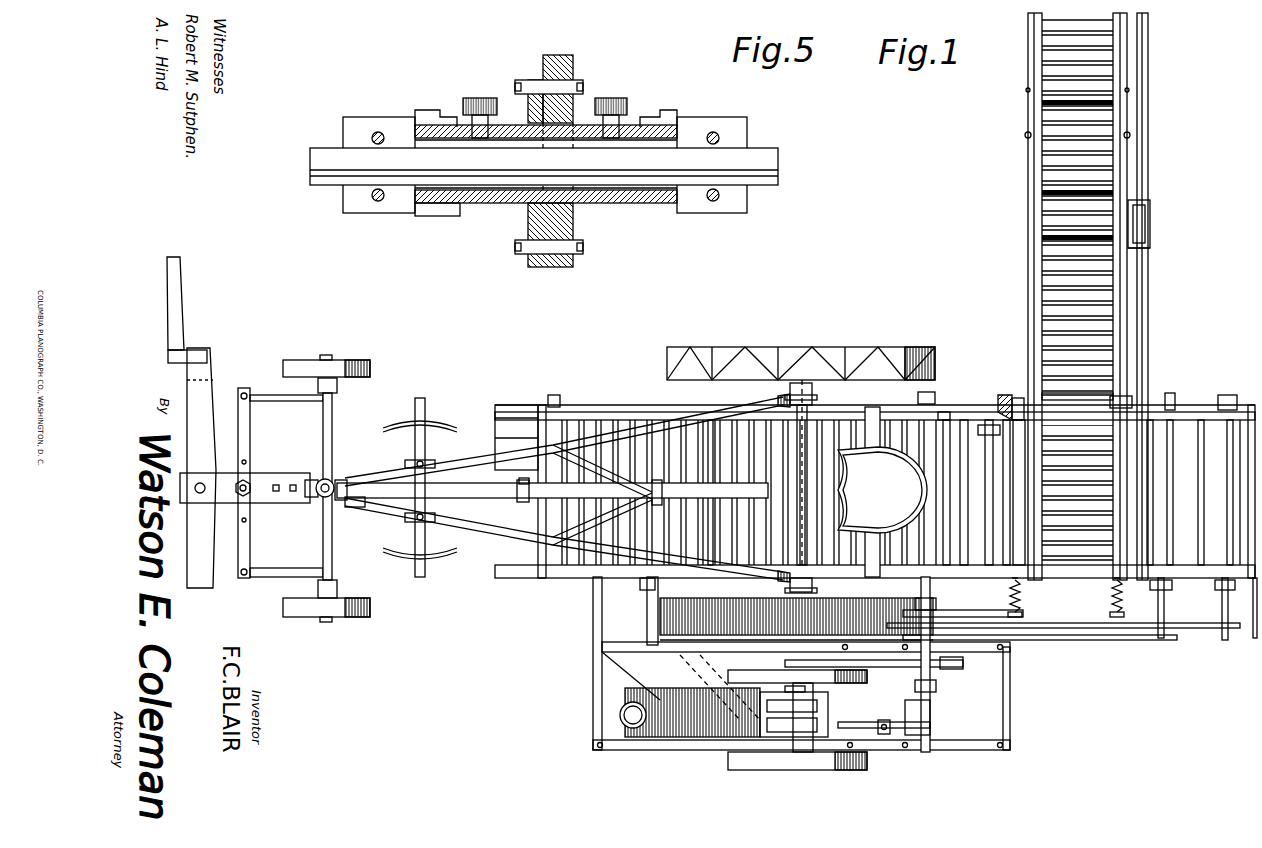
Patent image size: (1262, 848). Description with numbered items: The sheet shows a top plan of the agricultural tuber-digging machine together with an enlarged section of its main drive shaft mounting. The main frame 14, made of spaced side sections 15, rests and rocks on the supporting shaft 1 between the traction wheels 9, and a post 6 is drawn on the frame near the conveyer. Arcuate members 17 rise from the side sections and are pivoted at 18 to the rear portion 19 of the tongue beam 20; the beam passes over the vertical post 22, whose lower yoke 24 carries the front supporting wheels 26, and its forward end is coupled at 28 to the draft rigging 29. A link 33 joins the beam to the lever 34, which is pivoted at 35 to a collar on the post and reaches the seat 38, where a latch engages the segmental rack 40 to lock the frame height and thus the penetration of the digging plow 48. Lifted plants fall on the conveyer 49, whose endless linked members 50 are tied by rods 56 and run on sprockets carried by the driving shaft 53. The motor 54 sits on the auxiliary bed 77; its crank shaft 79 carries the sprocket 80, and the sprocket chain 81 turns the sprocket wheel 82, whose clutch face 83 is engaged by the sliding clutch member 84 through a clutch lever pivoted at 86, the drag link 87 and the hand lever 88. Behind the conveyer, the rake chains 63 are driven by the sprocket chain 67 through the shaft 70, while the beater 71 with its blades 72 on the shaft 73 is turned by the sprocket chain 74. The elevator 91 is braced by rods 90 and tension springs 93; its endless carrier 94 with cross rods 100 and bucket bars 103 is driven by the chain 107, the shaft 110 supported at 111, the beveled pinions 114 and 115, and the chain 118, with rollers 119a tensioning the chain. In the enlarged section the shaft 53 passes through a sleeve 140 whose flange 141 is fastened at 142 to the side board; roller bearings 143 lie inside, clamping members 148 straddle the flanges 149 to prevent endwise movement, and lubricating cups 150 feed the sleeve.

In FIG. 1, the supporting shaft 1 is at (820, 450).
In FIG. 1, the post 6 is at (808, 395).
In FIG. 1, the traction wheels 9 is at (720, 347).
In FIG. 1, the main frame 14 is at (588, 405).
In FIG. 5, the side sections 15 is at (560, 56).
In FIG. 1, the side sections 15 is at (552, 403).
In FIG. 1, the arcuate members 17 is at (492, 437).
In FIG. 1, the pivotal connection 18 is at (370, 462).
In FIG. 1, the rear portion of tongue beam 19 is at (357, 507).
In FIG. 1, the tongue beam 20 is at (302, 478).
In FIG. 1, the post 22 is at (333, 472).
In FIG. 1, the yoke 24 is at (323, 427).
In FIG. 1, the front supporting wheels 26 is at (295, 362).
In FIG. 1, the coupling 28 is at (266, 495).
In FIG. 1, the draft rigging 29 is at (205, 400).
In FIG. 1, the link 33 is at (523, 502).
In FIG. 1, the lever 34 is at (473, 542).
In FIG. 1, the pivot 35 is at (338, 500).
In FIG. 1, the seat 38 is at (882, 492).
In FIG. 1, the segmental rack 40 is at (655, 470).
In FIG. 1, the digging point or plow 48 is at (463, 548).
In FIG. 1, the conveyer 49 is at (710, 470).
In FIG. 1, the endless linked members 50 is at (898, 383).
In FIG. 5, the driving shaft 53 is at (770, 162).
In FIG. 1, the driving shaft 53 is at (943, 420).
In FIG. 1, the motor 54 is at (705, 740).
In FIG. 1, the rods 56 is at (750, 578).
In FIG. 1, the endless linked members of rake mechanism 63 is at (965, 430).
In FIG. 1, the sprocket chain 67 is at (1085, 640).
In FIG. 1, the shaft 70 is at (1182, 510).
In FIG. 1, the beater 71 is at (1225, 435).
In FIG. 1, the blades 72 is at (1255, 580).
In FIG. 1, the beater shaft 73 is at (1225, 640).
In FIG. 1, the sprocket chain 74 is at (1183, 630).
In FIG. 1, the auxiliary frame or bed 77 is at (1010, 742).
In FIG. 1, the crank shaft 79 is at (760, 702).
In FIG. 1, the sprocket 80 is at (785, 662).
In FIG. 1, the sprocket chain 81 is at (887, 672).
In FIG. 1, the sprocket wheel 82 is at (963, 664).
In FIG. 1, the clutch face 83 is at (932, 676).
In FIG. 1, the sliding clutch member 84 is at (932, 722).
In FIG. 1, the clutch lever pivot 86 is at (885, 740).
In FIG. 1, the drag link 87 is at (612, 645).
In FIG. 1, the lever 88 is at (647, 628).
In FIG. 1, the brace rods 90 is at (1028, 170).
In FIG. 1, the elevator 91 is at (1080, 32).
In FIG. 1, the tension springs 93 is at (1022, 597).
In FIG. 1, the endless carrier 94 is at (1060, 243).
In FIG. 1, the cross rods 100 is at (1040, 490).
In FIG. 1, the bucket bar 103 is at (1060, 103).
In FIG. 1, the chain 107 is at (1148, 70).
In FIG. 1, the shaft 110 is at (1085, 395).
In FIG. 1, the bearing 111 is at (1125, 396).
In FIG. 1, the beveled pinion 114 is at (1005, 395).
In FIG. 1, the beveled pinion 115 is at (995, 432).
In FIG. 1, the chain 118 is at (992, 610).
In FIG. 1, the rollers 119a is at (1148, 238).
In FIG. 5, the sleeve 140 is at (645, 125).
In FIG. 5, the annular flange 141 is at (526, 222).
In FIG. 5, the fastening 142 is at (585, 257).
In FIG. 5, the roller bearings 143 is at (695, 123).
In FIG. 5, the clamping members 148 is at (368, 122).
In FIG. 1, the clamping members 148 is at (928, 392).
In FIG. 5, the annular flanges 149 is at (432, 112).
In FIG. 5, the lubricating cups 150 is at (483, 98).